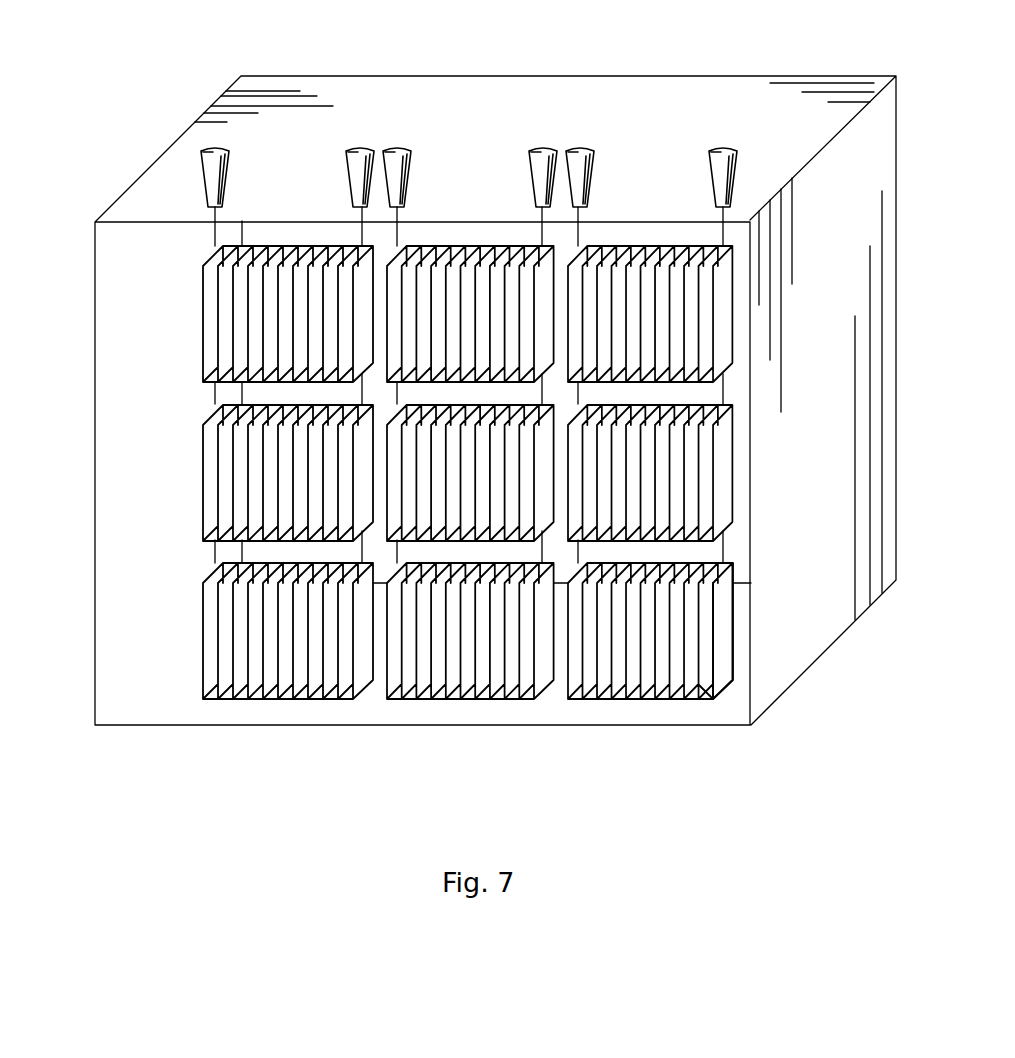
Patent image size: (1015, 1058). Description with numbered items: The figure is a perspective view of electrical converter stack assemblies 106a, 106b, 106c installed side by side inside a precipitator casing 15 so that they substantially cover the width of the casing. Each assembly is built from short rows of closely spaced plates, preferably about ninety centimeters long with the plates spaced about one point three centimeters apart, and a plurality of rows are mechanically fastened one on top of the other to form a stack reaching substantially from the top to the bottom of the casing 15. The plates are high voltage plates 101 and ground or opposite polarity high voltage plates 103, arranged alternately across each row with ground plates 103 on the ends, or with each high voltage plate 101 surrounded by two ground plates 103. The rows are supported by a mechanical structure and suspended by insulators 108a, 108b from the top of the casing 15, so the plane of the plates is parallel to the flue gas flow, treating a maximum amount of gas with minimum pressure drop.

The precipitator casing 15 is at (835, 610).
The high voltage plate 101 is at (707, 678).
The ground plate 103 is at (723, 625).
The converter stack assembly 106a is at (285, 700).
The converter stack assembly 106b is at (460, 700).
The converter stack assembly 106c is at (767, 503).
The insulator 108a is at (580, 147).
The insulator 108b is at (720, 147).